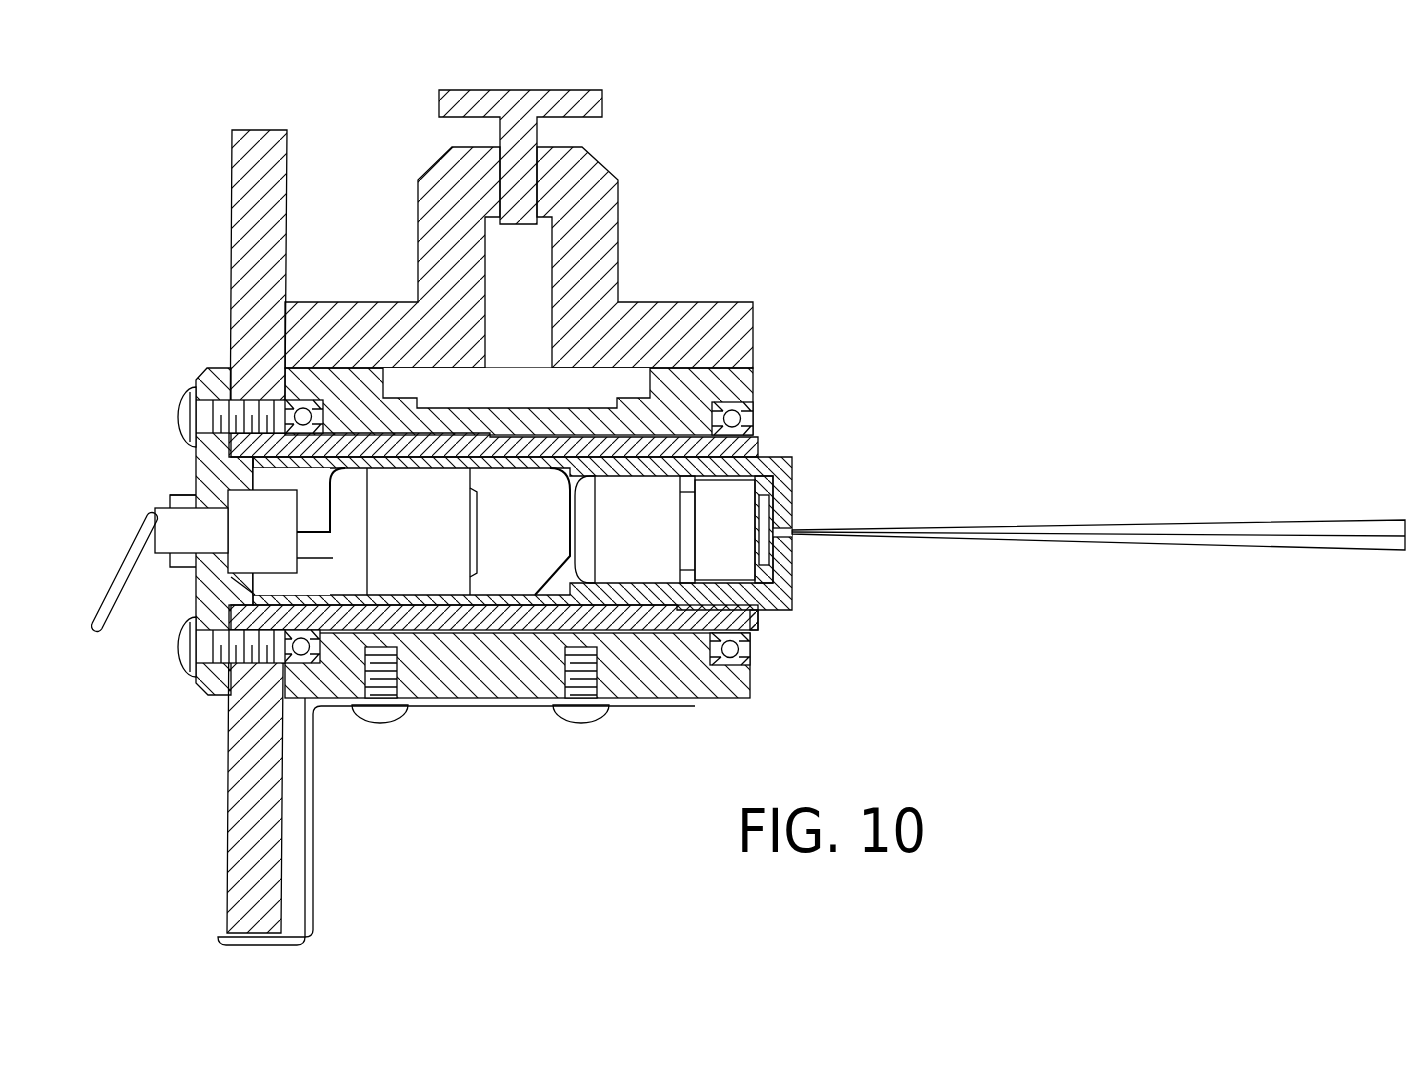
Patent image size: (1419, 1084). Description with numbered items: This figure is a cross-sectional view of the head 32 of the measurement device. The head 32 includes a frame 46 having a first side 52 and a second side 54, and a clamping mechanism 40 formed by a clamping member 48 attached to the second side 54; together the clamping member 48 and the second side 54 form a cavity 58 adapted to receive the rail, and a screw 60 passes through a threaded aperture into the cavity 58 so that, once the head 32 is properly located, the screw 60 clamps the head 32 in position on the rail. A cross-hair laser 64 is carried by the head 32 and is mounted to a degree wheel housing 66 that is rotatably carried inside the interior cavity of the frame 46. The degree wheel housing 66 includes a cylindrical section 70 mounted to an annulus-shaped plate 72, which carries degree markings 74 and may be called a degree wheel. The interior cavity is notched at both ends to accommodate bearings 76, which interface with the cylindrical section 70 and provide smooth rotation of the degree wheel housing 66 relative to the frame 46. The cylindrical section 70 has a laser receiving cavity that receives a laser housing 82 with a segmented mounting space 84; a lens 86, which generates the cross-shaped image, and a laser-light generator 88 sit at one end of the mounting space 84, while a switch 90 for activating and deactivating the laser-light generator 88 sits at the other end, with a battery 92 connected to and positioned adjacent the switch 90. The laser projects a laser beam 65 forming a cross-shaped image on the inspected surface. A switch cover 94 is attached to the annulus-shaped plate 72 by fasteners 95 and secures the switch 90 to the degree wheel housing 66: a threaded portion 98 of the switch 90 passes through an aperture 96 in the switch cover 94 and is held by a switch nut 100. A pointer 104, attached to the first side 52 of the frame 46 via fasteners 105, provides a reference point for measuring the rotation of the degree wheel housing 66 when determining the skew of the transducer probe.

The head 32 is at (373, 280).
The clamping mechanism 40 is at (632, 214).
The frame 46 is at (720, 390).
The clamping member 48 is at (713, 302).
The first side 52 is at (713, 698).
The second side 54 is at (717, 355).
The cavity 58 is at (540, 299).
The screw 60 is at (597, 105).
The cross-hair laser 64 is at (740, 612).
The laser beam 65 is at (1265, 522).
The degree wheel housing 66 is at (282, 808).
The cylindrical section 70 is at (470, 620).
The annulus-shaped plate 72 is at (267, 875).
The degree markings 74 is at (206, 791).
The bearings 76 is at (285, 402).
The laser housing 82 is at (785, 600).
The mounting space 84 is at (540, 526).
The lens 86 is at (740, 520).
The laser-light generator 88 is at (645, 497).
The switch 90 is at (165, 547).
The battery 92 is at (430, 552).
The switch cover 94 is at (208, 682).
The fasteners 95 is at (182, 397).
The aperture 96 is at (153, 517).
The threaded portion 98 is at (168, 512).
The switch nut 100 is at (178, 490).
The pointer 104 is at (313, 786).
The fasteners 105 is at (385, 712).